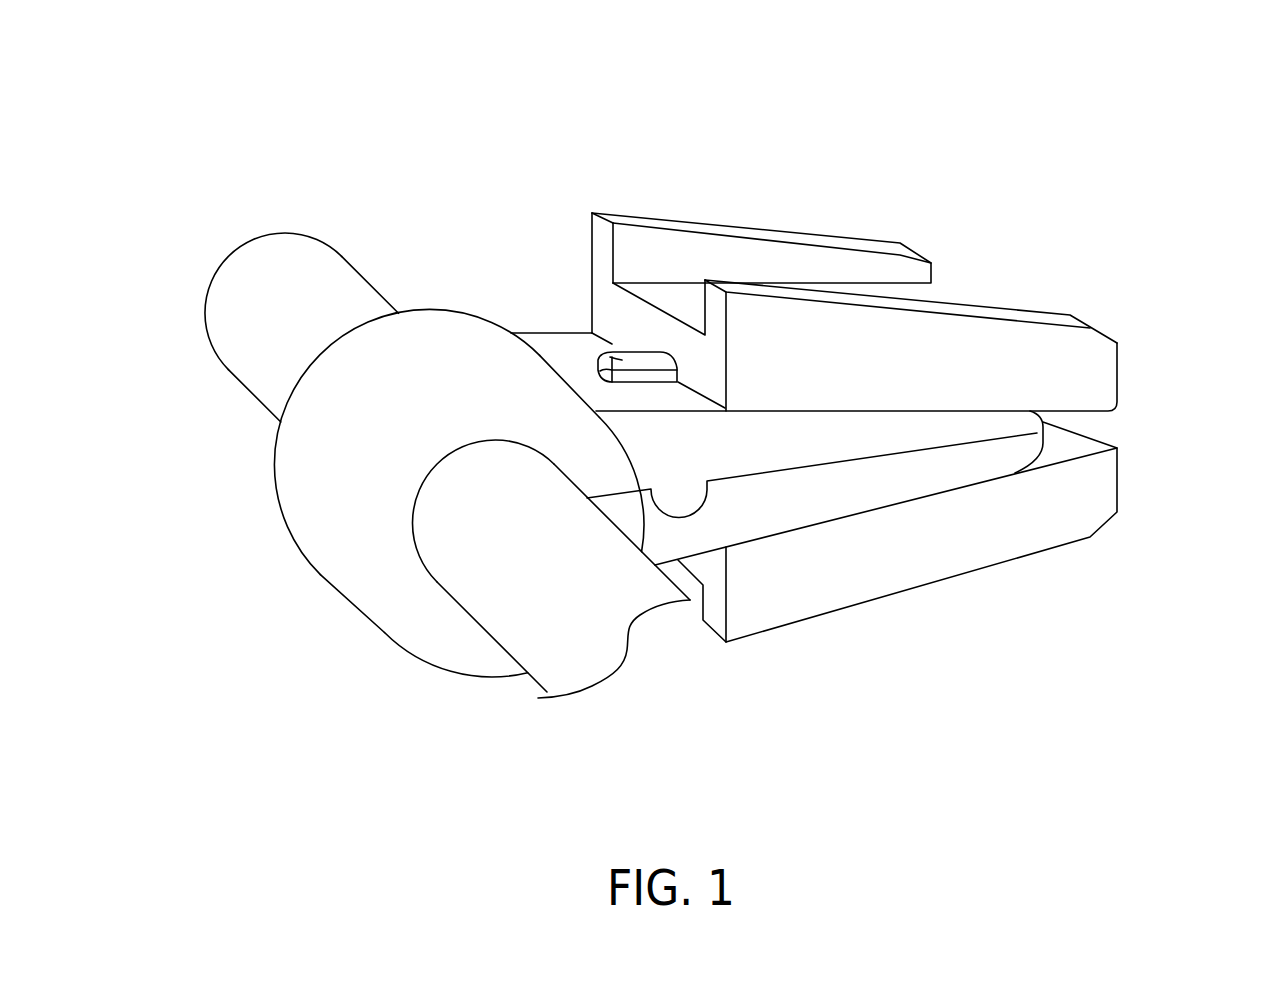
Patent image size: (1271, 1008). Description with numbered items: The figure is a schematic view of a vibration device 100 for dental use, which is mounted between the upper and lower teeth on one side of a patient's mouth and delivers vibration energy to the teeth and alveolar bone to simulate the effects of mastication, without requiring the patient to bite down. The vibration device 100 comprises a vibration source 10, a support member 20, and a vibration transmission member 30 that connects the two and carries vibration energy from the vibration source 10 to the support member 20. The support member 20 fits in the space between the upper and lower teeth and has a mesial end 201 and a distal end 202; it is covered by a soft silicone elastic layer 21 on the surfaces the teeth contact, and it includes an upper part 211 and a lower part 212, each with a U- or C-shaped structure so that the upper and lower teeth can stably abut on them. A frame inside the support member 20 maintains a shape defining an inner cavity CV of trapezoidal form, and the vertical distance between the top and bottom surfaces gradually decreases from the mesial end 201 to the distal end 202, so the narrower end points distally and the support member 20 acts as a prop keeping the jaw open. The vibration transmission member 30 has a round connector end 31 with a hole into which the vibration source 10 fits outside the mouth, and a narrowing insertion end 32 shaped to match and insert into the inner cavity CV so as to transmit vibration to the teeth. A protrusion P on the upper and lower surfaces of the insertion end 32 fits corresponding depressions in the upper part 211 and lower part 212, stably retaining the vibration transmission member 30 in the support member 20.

The vibration device 100 is at (133, 48).
The vibration source 10 is at (585, 665).
The support member 20 is at (566, 186).
The elastic layer 21 is at (765, 230).
The mesial end 201 is at (657, 307).
The distal end 202 is at (977, 297).
The upper part 211 is at (603, 250).
The lower part 212 is at (707, 568).
The vibration transmission member 30 is at (363, 667).
The connector end 31 is at (305, 477).
The insertion end 32 is at (910, 480).
The protrusion P is at (603, 350).
The inner cavity CV is at (1078, 422).